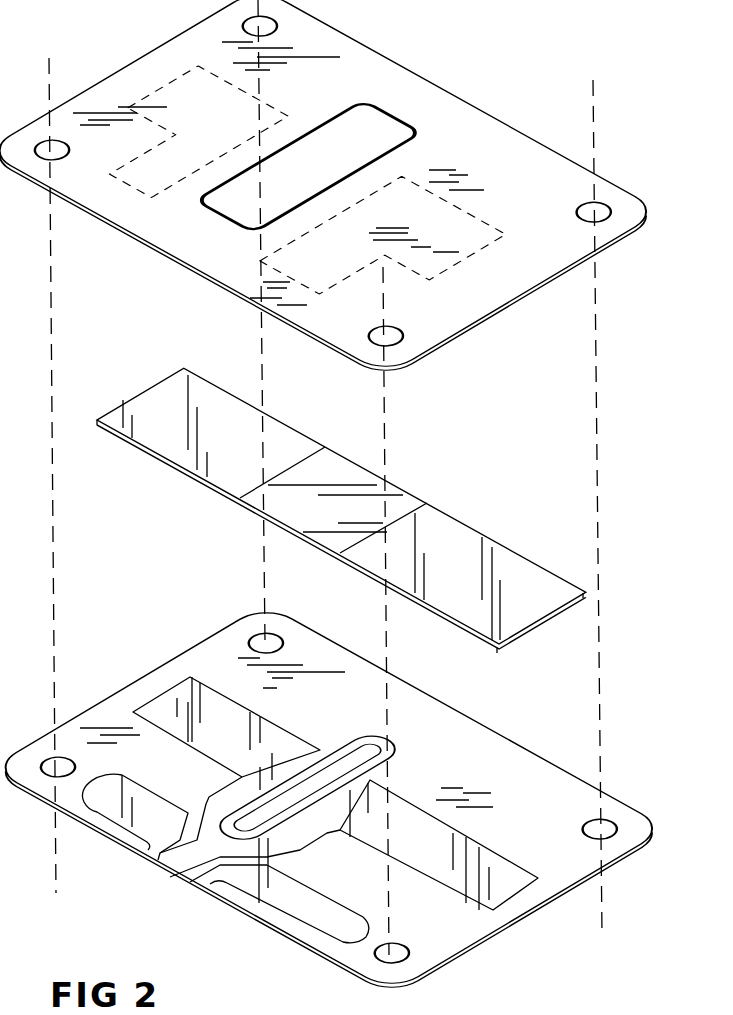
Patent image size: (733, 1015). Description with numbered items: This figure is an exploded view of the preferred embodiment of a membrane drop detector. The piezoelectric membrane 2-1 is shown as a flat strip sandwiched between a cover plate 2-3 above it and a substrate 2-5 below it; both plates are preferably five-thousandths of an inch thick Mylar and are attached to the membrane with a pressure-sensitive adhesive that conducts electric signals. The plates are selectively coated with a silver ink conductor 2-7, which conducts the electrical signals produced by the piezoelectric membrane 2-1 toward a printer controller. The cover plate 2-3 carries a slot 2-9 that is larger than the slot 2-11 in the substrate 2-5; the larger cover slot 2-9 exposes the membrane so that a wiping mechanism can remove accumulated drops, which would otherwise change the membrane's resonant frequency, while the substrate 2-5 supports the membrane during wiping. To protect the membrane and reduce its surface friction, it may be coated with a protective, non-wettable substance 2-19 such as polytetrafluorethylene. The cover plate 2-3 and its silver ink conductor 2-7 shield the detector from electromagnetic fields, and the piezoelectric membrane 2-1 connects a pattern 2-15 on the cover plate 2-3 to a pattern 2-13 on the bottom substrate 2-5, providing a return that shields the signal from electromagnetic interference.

The piezoelectric membrane 2-1 is at (440, 523).
The cover plate 2-3 is at (496, 278).
The substrate 2-5 is at (636, 823).
The silver ink conductor 2-7 is at (503, 872).
The slot in the cover plate 2-9 is at (350, 137).
The slot in the substrate 2-11 is at (341, 758).
The pattern on the bottom substrate 2-13 is at (293, 907).
The pattern on the cover plate 2-15 is at (193, 65).
The protective non-wettable substance 2-19 is at (392, 507).